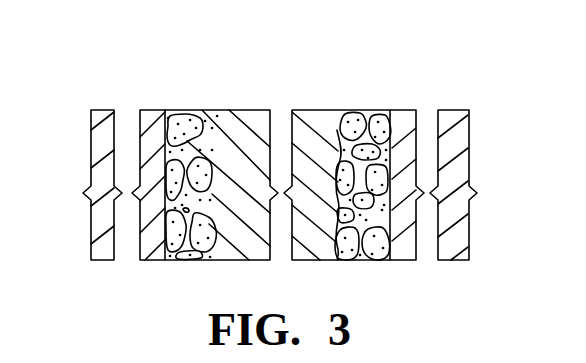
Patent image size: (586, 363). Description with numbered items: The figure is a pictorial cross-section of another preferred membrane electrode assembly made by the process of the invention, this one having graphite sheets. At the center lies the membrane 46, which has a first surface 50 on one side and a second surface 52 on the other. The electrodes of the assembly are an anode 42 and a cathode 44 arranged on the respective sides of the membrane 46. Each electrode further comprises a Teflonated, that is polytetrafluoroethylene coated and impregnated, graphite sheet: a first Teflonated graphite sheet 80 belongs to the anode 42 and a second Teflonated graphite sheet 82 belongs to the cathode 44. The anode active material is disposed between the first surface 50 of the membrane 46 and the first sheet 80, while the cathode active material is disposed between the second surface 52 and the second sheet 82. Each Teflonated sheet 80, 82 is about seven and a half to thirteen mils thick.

The anode 42 is at (195, 261).
The cathode 44 is at (366, 261).
The membrane 46 is at (262, 110).
The first surface of the membrane 50 is at (212, 137).
The second surface of the membrane 52 is at (337, 130).
The first Teflonated graphite sheet 80 is at (153, 110).
The second Teflonated graphite sheet 82 is at (403, 110).